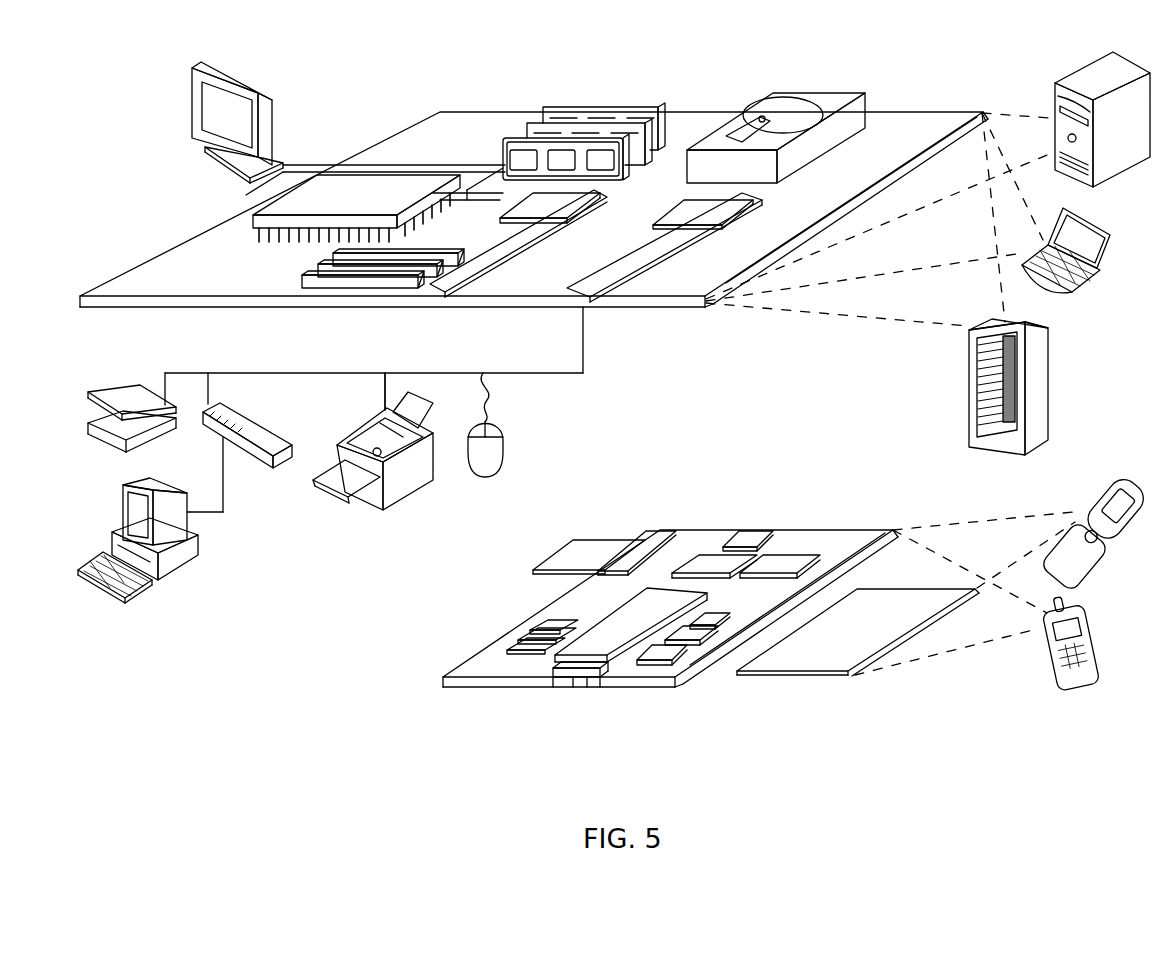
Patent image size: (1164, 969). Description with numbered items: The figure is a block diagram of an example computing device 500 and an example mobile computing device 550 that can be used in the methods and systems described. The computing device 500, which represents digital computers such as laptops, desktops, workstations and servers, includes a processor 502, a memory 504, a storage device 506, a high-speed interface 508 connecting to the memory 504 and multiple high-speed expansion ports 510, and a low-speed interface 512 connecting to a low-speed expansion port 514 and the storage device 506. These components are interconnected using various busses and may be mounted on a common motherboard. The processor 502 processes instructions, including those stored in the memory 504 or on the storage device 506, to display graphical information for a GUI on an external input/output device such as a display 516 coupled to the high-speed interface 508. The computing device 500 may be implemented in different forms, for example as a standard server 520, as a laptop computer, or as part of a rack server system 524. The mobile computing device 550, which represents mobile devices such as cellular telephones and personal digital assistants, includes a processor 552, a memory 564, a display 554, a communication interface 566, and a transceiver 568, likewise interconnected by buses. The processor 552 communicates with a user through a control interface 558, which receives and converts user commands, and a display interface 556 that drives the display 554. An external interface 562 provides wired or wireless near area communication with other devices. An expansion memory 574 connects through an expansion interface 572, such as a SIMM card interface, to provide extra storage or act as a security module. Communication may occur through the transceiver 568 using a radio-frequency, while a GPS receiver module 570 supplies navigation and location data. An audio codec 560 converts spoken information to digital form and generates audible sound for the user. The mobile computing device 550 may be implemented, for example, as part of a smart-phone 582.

The computing device 500 is at (614, 319).
The processor 502 is at (253, 213).
The memory 504 is at (553, 137).
The storage device 506 is at (768, 96).
The high-speed interface 508 is at (500, 192).
The high-speed expansion ports 510 is at (303, 276).
The low-speed interface 512 is at (684, 208).
The low-speed expansion port 514 is at (600, 298).
The display 516 is at (193, 67).
The standard server 520 is at (1053, 95).
The rack server system 524 is at (968, 405).
The mobile computing device 550 is at (753, 607).
The processor 552 is at (592, 677).
The display 554 is at (832, 663).
The display interface 556 is at (673, 665).
The control interface 558 is at (708, 646).
The audio codec 560 is at (722, 630).
The external interface 562 is at (574, 688).
The memory 564 is at (523, 638).
The communication interface 566 is at (710, 562).
The transceiver 568 is at (785, 556).
The GPS receiver module 570 is at (752, 535).
The expansion interface 572 is at (648, 545).
The expansion memory 574 is at (578, 543).
The smart-phone 582 is at (1045, 655).